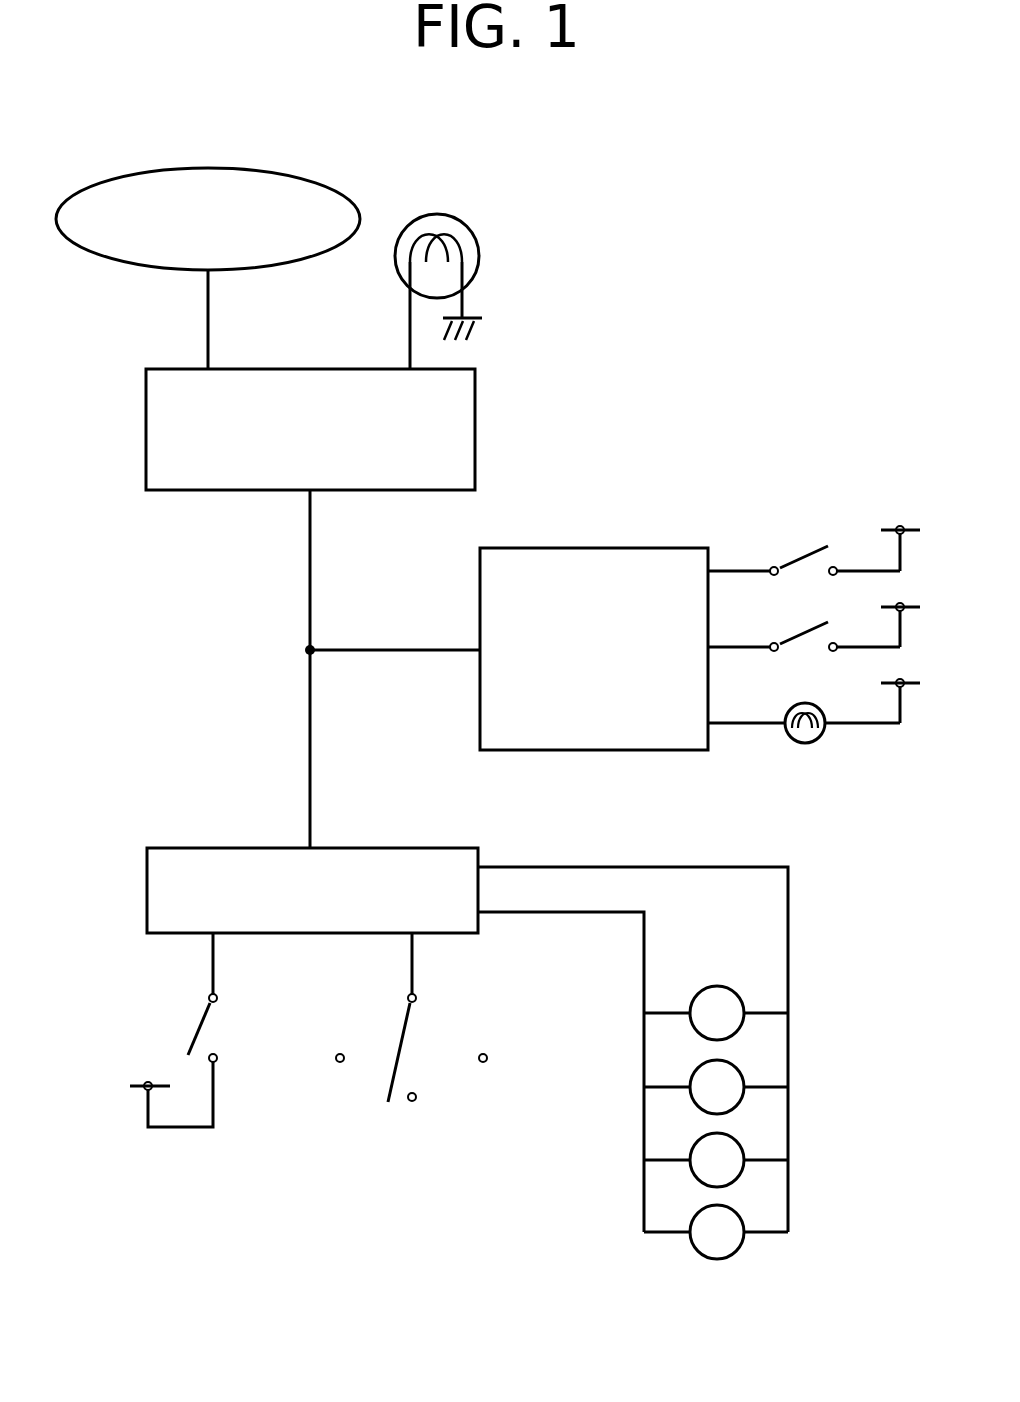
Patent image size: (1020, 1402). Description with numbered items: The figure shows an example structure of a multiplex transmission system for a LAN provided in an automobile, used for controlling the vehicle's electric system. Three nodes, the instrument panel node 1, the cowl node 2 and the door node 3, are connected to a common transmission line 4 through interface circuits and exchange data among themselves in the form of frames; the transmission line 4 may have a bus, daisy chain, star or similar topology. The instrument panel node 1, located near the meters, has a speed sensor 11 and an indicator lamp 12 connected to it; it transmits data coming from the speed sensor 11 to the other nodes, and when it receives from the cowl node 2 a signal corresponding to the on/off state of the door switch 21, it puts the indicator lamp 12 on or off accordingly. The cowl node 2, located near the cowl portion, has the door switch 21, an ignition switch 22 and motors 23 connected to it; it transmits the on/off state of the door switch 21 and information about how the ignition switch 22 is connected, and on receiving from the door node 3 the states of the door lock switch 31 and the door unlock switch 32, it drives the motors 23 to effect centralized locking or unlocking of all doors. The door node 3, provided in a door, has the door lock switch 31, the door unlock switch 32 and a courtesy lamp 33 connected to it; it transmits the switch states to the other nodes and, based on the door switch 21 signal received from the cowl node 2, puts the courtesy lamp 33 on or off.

The instrument panel node 1 is at (475, 408).
The cowl node 2 is at (405, 848).
The door node 3 is at (607, 548).
The transmission line 4 is at (310, 573).
The speed sensor 11 is at (310, 178).
The indicator lamp 12 is at (480, 250).
The door switch 21 is at (200, 1028).
The ignition switch 22 is at (402, 1028).
The motors 23 is at (736, 994).
The door lock switch 31 is at (800, 560).
The door unlock switch 32 is at (800, 636).
The courtesy lamp 33 is at (815, 745).